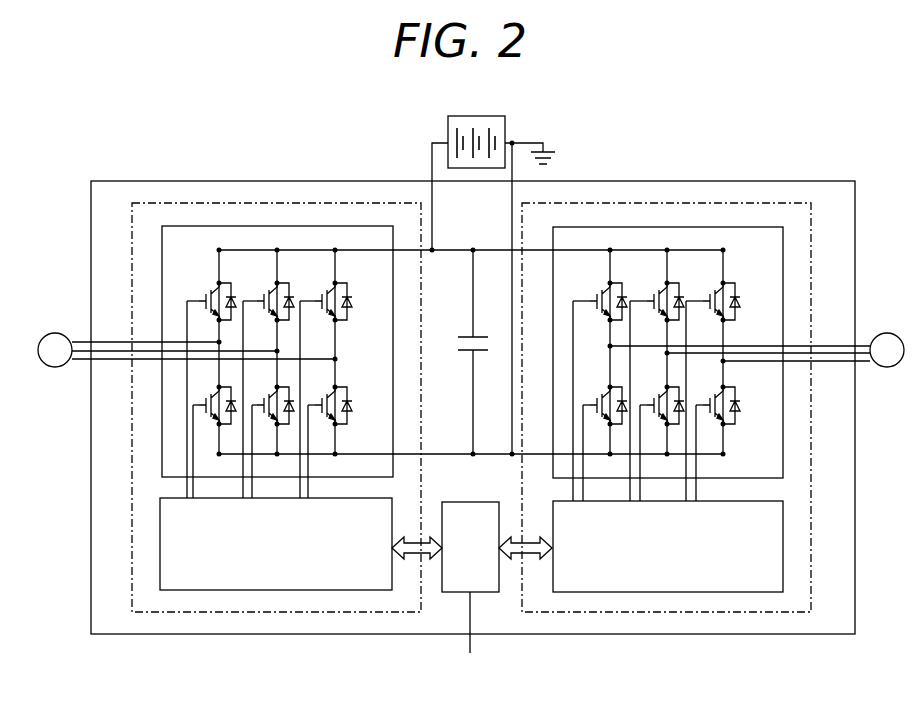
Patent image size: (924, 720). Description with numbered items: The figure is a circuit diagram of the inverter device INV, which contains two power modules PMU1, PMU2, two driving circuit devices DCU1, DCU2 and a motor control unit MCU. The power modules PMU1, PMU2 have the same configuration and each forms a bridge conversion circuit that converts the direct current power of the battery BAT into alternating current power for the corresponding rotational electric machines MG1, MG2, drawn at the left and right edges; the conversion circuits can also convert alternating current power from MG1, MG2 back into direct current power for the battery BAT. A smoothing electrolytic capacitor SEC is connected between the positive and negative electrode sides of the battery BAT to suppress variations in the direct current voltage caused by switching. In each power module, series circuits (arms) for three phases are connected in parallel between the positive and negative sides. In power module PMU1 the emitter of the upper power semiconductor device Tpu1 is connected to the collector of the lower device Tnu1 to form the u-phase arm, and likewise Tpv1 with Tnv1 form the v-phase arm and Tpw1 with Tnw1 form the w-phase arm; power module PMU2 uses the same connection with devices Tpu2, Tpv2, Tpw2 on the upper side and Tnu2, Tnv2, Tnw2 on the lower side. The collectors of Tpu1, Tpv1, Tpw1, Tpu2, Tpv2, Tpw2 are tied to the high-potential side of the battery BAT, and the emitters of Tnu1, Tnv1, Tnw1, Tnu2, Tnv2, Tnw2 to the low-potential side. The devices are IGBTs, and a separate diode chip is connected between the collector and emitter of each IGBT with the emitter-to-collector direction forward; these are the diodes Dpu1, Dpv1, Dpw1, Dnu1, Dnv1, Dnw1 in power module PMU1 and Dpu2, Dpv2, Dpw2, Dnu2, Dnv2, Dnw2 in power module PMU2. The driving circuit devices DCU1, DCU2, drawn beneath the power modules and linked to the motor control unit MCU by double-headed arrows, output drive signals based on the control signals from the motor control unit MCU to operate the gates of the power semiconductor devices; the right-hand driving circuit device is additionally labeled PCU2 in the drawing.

The inverter device INV is at (800, 181).
The battery BAT is at (482, 116).
The smoothing electrolytic capacitor SEC is at (456, 346).
The motor control unit MCU is at (471, 502).
The rotational electric machine MG1 is at (55, 367).
The rotational electric machine MG2 is at (887, 367).
The power module PMU1 is at (162, 270).
The power module PMU2 is at (783, 262).
The driving circuit device DCU1 is at (160, 556).
The driving circuit device DCU2 is at (668, 546).
The second power control unit PCU2 is at (783, 548).
The power semiconductor device Tpu1 is at (206, 296).
The power semiconductor device Tpv1 is at (266, 296).
The power semiconductor device Tpw1 is at (325, 296).
The power semiconductor device Tnu1 is at (208, 400).
The power semiconductor device Tnv1 is at (266, 400).
The power semiconductor device Tnw1 is at (328, 398).
The upper arm U-phase diode of PMU1 Dpu1 is at (235, 290).
The upper arm V-phase diode of PMU1 Dpv1 is at (291, 286).
The upper arm W-phase diode of PMU1 Dpw1 is at (350, 294).
The lower arm U-phase diode of PMU1 Dnu1 is at (233, 392).
The lower arm V-phase diode of PMU1 Dnv1 is at (291, 394).
The lower arm W-phase diode of PMU1 Dnw1 is at (349, 400).
The power semiconductor device Tpu2 is at (600, 296).
The power semiconductor device Tpv2 is at (657, 296).
The power semiconductor device Tpw2 is at (713, 296).
The power semiconductor device Tnu2 is at (600, 400).
The power semiconductor device Tnv2 is at (658, 400).
The power semiconductor device Tnw2 is at (713, 400).
The upper arm U-phase diode of PMU2 Dpu2 is at (623, 290).
The upper arm V-phase diode of PMU2 Dpv2 is at (680, 292).
The upper arm W-phase diode of PMU2 Dpw2 is at (736, 293).
The lower arm U-phase diode of PMU2 Dnu2 is at (623, 394).
The lower arm V-phase diode of PMU2 Dnv2 is at (680, 394).
The lower arm W-phase diode of PMU2 Dnw2 is at (736, 396).